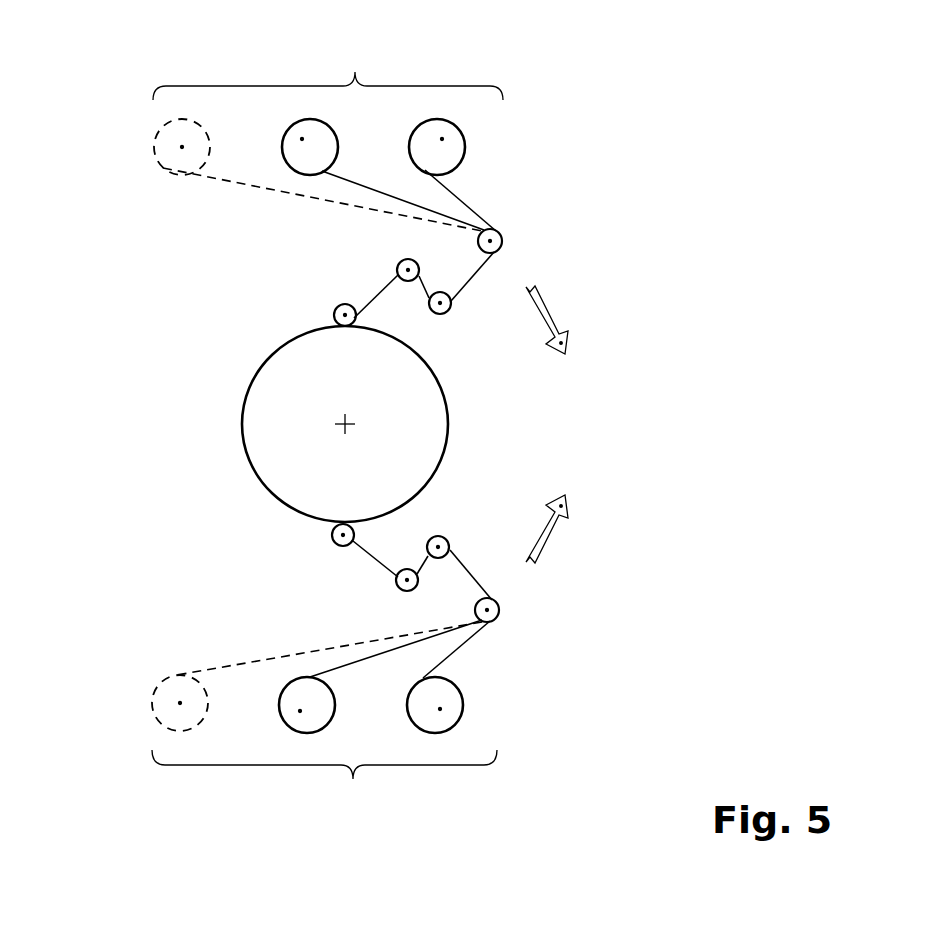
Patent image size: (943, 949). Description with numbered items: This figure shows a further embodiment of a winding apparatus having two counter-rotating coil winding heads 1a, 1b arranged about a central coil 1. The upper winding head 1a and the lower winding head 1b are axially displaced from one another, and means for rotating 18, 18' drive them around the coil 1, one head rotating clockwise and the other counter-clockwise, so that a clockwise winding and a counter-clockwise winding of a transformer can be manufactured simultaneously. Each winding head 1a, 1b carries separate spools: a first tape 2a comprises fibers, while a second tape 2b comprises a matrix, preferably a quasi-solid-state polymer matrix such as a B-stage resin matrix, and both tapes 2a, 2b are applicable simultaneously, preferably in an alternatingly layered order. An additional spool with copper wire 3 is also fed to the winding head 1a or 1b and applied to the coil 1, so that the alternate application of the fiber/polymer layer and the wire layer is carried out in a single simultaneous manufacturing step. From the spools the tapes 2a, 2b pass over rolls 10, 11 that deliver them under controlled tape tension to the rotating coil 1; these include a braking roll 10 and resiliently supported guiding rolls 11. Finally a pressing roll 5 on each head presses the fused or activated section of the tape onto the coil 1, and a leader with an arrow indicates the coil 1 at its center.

The coil 1 is at (278, 424).
The winding head 1a is at (328, 69).
The winding head 1b is at (324, 783).
The fiber tape 2a is at (442, 138).
The matrix tape 2b is at (302, 137).
The copper wire 3 is at (182, 140).
The pressing roll 5 is at (343, 315).
The braking roll 10 is at (492, 241).
The guiding roll 11 is at (408, 270).
The means for rotating 18 is at (636, 334).
The means for rotating 18' is at (639, 519).